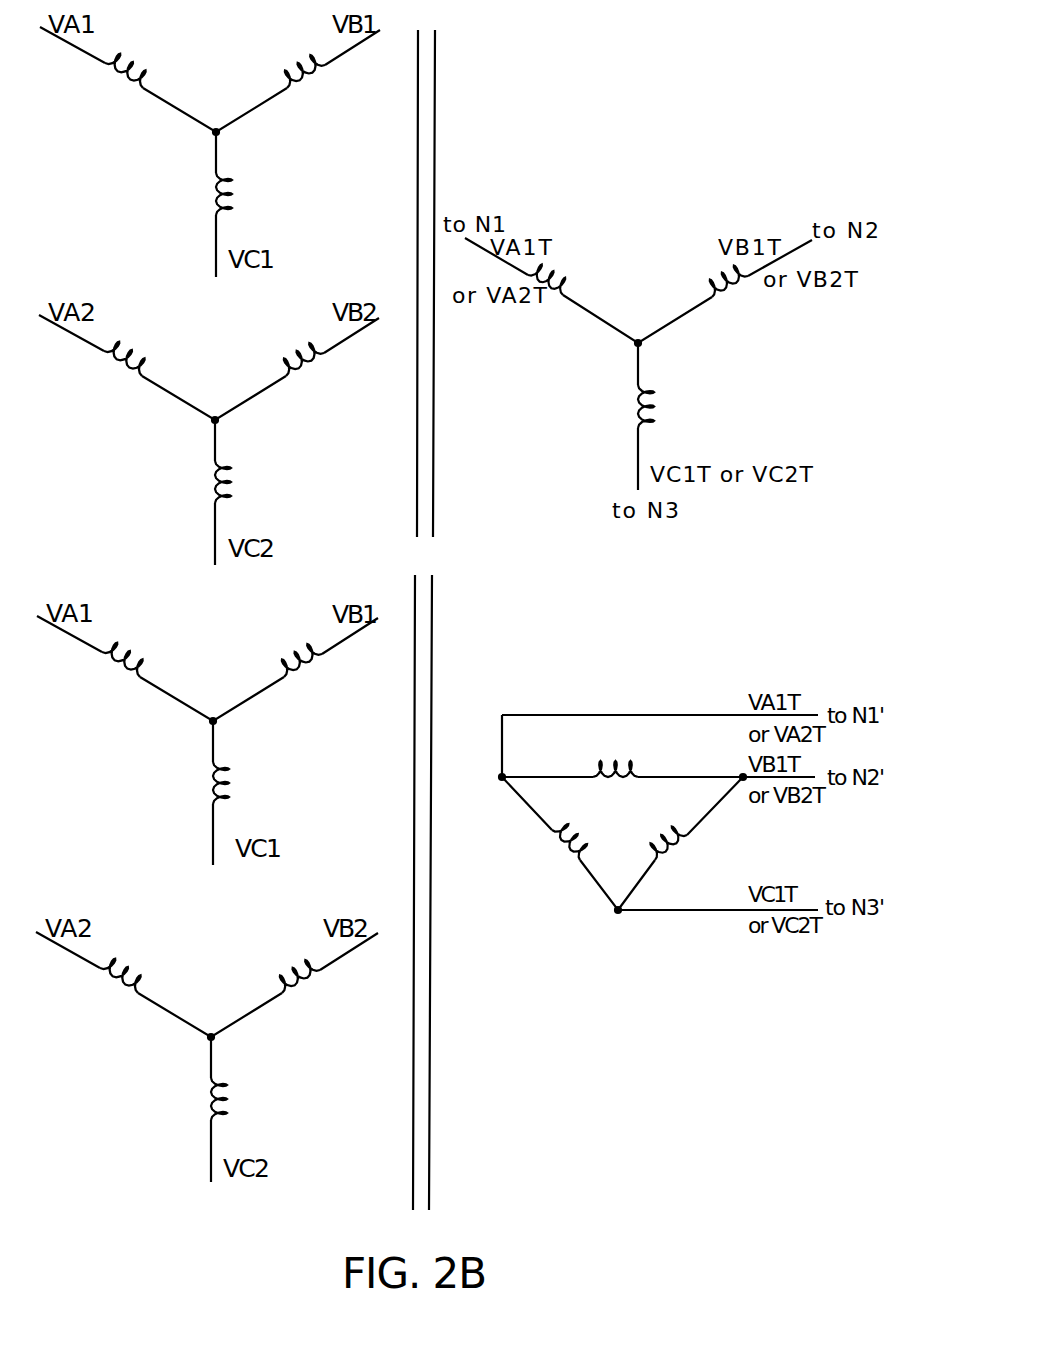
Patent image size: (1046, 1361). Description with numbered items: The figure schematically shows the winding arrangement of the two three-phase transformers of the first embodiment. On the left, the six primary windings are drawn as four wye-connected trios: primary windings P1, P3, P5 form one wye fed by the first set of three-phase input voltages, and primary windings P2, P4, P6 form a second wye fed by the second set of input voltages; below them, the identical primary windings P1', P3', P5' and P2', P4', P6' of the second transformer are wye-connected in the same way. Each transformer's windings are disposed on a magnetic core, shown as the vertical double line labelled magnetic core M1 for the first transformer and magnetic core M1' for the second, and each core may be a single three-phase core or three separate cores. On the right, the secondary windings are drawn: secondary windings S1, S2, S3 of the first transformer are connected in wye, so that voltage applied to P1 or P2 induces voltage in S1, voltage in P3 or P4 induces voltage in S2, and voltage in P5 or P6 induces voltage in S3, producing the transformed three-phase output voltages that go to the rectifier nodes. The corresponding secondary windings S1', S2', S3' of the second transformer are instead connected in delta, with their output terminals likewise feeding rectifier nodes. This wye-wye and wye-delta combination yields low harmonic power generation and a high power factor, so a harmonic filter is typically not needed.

The primary winding P1 is at (136, 61).
The primary winding P2 is at (135, 349).
The primary winding P3 is at (312, 82).
The primary winding P4 is at (311, 370).
The primary winding P5 is at (246, 194).
The primary winding P6 is at (245, 482).
The primary winding P1' is at (135, 650).
The primary winding P2' is at (133, 966).
The primary winding P3' is at (311, 670).
The primary winding P4' is at (308, 986).
The primary winding P5' is at (244, 783).
The primary winding P6' is at (242, 1099).
The secondary winding S1 is at (558, 269).
The secondary winding S2 is at (730, 290).
The secondary winding S3 is at (668, 406).
The secondary winding S1' is at (629, 751).
The secondary winding S2' is at (688, 842).
The secondary winding S3' is at (552, 846).
The magnetic core M1 is at (465, 283).
The magnetic core M1' is at (462, 894).